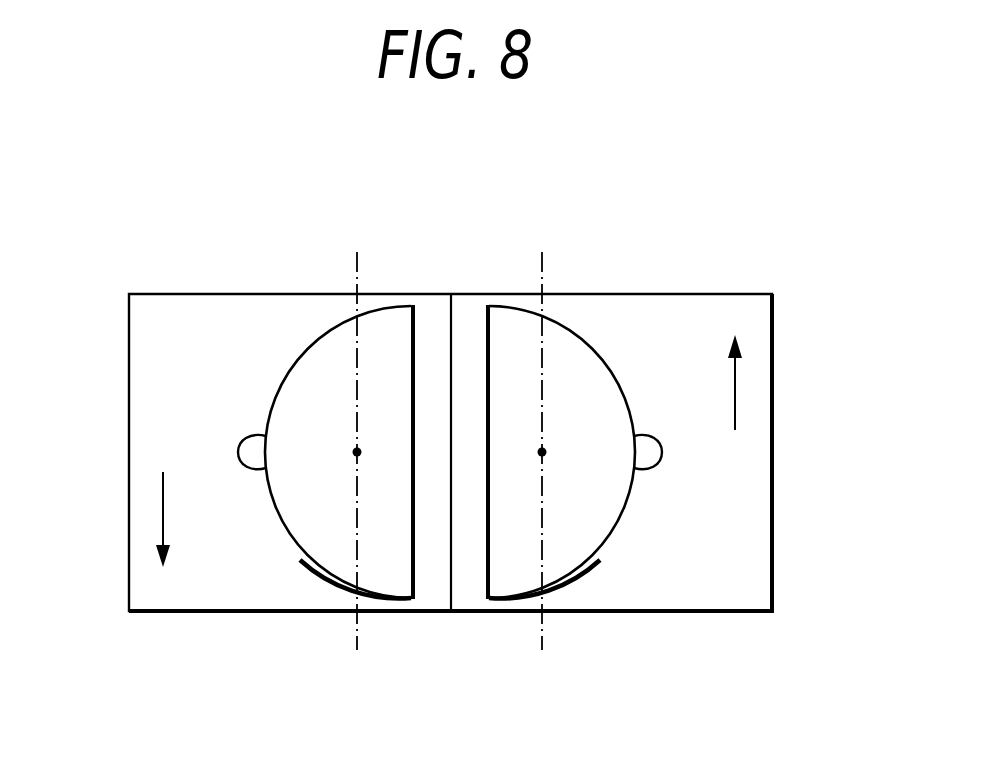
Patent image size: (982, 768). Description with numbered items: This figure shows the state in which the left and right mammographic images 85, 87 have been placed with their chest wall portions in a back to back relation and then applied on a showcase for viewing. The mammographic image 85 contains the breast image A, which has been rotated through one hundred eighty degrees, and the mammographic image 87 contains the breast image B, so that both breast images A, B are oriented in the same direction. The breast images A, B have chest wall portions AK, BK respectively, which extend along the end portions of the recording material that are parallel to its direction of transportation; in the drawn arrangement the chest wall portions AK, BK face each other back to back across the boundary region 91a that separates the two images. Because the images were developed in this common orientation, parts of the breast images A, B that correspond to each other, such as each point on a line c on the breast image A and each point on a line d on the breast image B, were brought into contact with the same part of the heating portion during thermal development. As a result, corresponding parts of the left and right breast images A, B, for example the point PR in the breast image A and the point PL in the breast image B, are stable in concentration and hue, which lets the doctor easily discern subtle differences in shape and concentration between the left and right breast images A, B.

The mammographic image 85 is at (130, 452).
The mammographic image 87 is at (760, 455).
The partition / center divider 91a is at (452, 585).
The breast image A is at (318, 352).
The breast image B is at (580, 353).
The chest wall portion AK is at (414, 342).
The chest wall portion BK is at (487, 342).
The point PR is at (357, 452).
The point PL is at (542, 452).
The line c is at (352, 633).
The line d is at (545, 632).